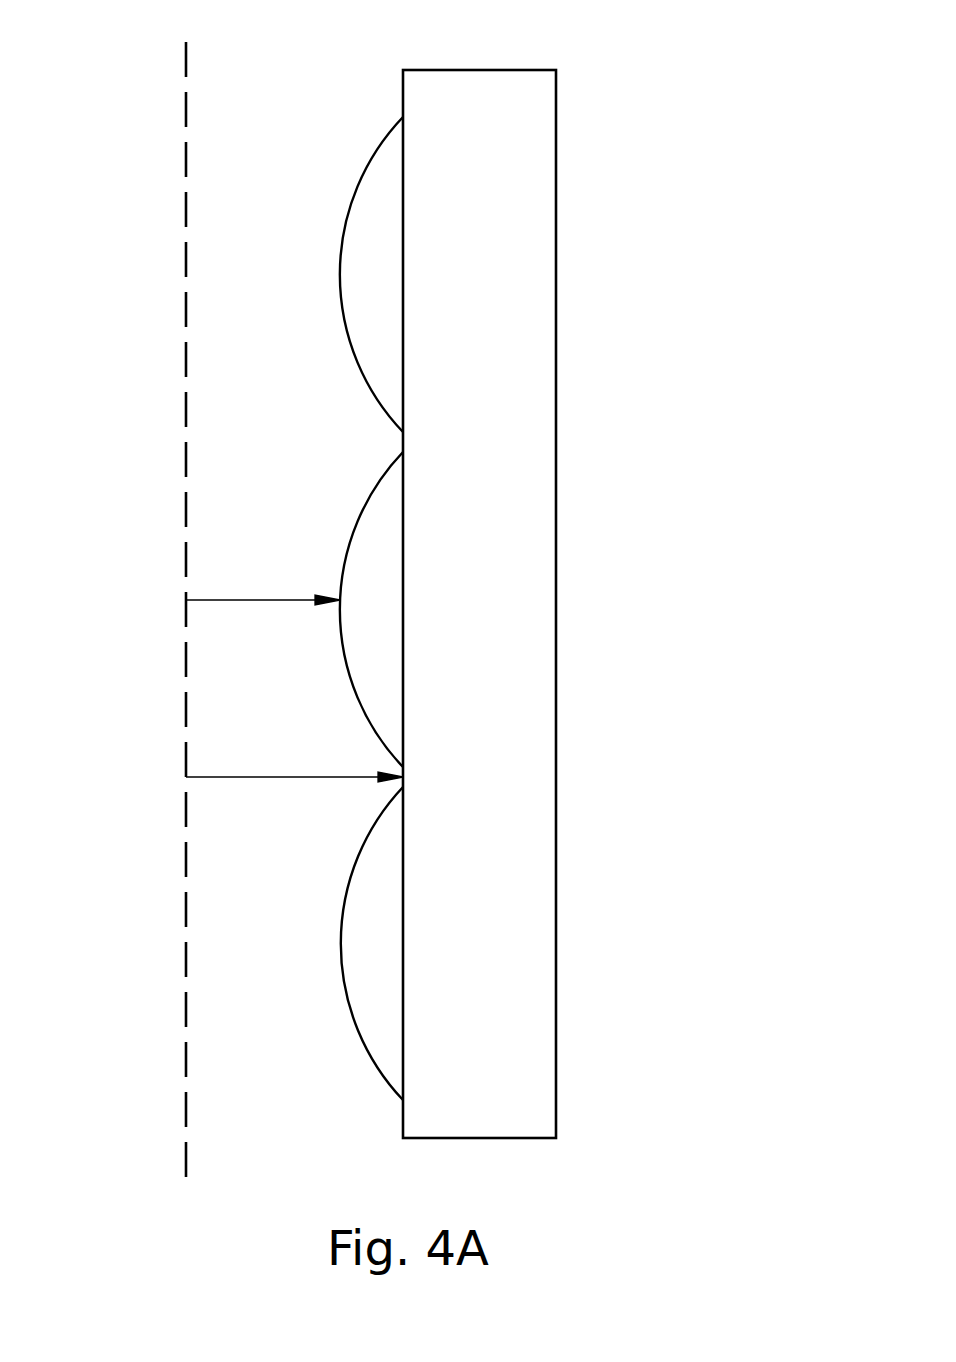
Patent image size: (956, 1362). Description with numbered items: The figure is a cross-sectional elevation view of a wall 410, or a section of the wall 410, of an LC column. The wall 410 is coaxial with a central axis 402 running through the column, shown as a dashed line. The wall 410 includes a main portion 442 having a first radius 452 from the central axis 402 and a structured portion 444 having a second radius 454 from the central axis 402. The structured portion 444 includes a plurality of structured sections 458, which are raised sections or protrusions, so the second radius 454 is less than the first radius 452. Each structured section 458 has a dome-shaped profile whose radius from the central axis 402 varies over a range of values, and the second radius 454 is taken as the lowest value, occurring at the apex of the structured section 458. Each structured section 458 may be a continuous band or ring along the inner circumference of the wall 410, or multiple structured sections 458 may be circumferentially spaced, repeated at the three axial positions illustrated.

The central axis 402 is at (185, 68).
The wall 410 is at (582, 104).
The structured portion 444 is at (307, 298).
The main portion 442 is at (383, 440).
The structured section 458 is at (355, 190).
The second radius 454 is at (209, 600).
The first radius 452 is at (223, 777).